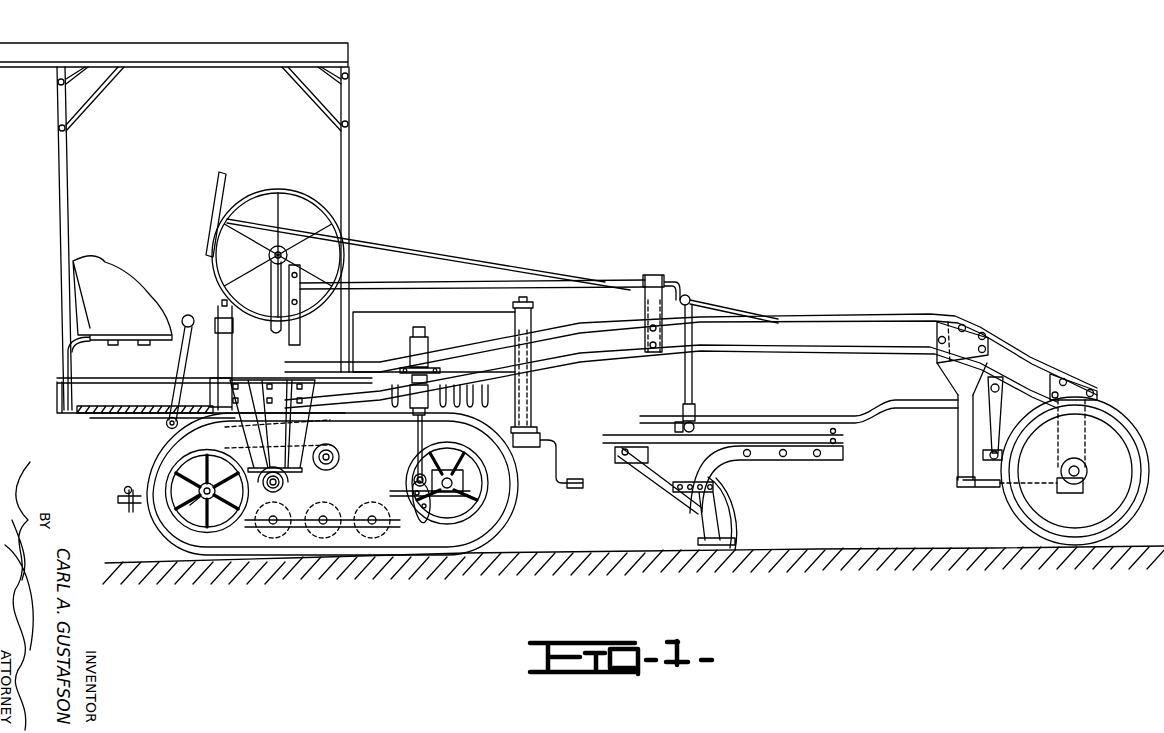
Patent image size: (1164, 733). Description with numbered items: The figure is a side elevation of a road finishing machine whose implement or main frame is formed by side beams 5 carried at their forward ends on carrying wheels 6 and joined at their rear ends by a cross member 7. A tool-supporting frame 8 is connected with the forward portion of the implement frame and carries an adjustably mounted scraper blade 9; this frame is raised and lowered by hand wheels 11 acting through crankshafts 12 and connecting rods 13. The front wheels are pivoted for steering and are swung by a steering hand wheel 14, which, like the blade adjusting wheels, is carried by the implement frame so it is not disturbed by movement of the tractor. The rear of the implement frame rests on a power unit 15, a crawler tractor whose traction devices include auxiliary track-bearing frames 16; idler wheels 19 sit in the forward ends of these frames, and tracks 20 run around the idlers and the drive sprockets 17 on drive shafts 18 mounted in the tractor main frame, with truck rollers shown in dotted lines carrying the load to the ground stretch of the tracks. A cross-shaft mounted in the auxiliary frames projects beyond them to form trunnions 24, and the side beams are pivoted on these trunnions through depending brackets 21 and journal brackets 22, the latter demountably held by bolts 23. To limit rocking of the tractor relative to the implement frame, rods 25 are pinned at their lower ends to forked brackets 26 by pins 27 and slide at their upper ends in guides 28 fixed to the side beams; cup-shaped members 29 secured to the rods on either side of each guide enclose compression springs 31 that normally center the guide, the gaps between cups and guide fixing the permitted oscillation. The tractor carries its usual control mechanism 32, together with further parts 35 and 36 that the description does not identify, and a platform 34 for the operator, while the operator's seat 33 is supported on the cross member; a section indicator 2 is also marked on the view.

The section line 2- 2 is at (96, 184).
The side beams 5 is at (848, 318).
The carrying wheels 6 is at (1033, 527).
The cross member 7 is at (57, 380).
The tool-supporting frame 8 is at (697, 450).
The scraper blade 9 is at (720, 513).
The hand wheels 11 is at (305, 192).
The crankshafts 12 is at (445, 282).
The connecting rods 13 is at (685, 382).
The steering hand wheel 14 is at (222, 172).
The power unit 15 is at (372, 312).
The auxiliary track-bearing frames 16 is at (345, 500).
The drive sprockets 17 is at (176, 522).
The drive shafts 18 is at (207, 499).
The idler wheels 19 is at (480, 472).
The tracks 20 is at (502, 521).
The depending brackets 21 is at (280, 352).
The journal brackets 22 is at (274, 493).
The bolts 23 is at (273, 453).
The trunnions 24 is at (190, 507).
The rods 25 is at (340, 455).
The forked brackets 26 is at (428, 512).
The pins 27 is at (418, 478).
The guides 28 is at (443, 355).
The cup-shaped members 29 is at (400, 352).
The compression springs 31 is at (398, 365).
The control mechanism 32 is at (240, 300).
The operator's seat 33 is at (80, 276).
The platform 34 is at (133, 406).
The hand lever 35 is at (222, 358).
The column clamp 36 is at (217, 312).